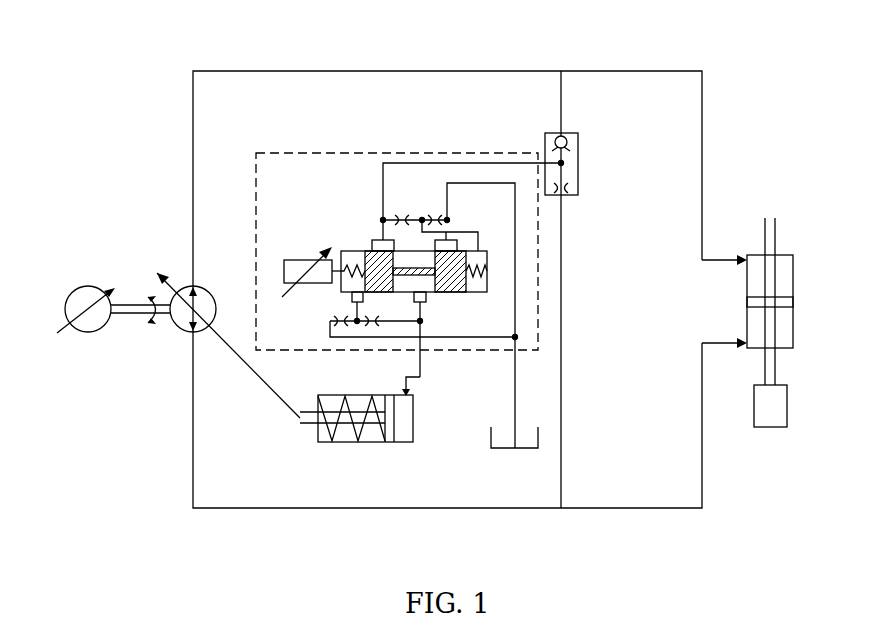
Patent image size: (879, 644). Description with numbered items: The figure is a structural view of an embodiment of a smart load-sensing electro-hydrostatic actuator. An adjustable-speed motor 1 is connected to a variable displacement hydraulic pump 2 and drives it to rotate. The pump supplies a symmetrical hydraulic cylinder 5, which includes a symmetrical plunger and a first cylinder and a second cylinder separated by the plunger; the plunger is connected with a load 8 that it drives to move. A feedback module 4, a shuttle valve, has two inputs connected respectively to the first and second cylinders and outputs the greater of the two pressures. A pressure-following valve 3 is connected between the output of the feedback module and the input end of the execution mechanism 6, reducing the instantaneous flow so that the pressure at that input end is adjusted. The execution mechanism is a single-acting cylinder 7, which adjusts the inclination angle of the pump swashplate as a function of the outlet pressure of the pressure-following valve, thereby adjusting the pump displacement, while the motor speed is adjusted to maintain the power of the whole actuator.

The adjustable-speed motor 1 is at (80, 287).
The variable displacement hydraulic pump 2 is at (187, 288).
The pressure-following valve 3 is at (315, 153).
The feedback module 4 is at (557, 133).
The symmetrical hydraulic cylinder 5 is at (752, 348).
The execution mechanism 6 is at (503, 448).
The single-acting cylinder 7 is at (368, 442).
The load 8 is at (778, 427).